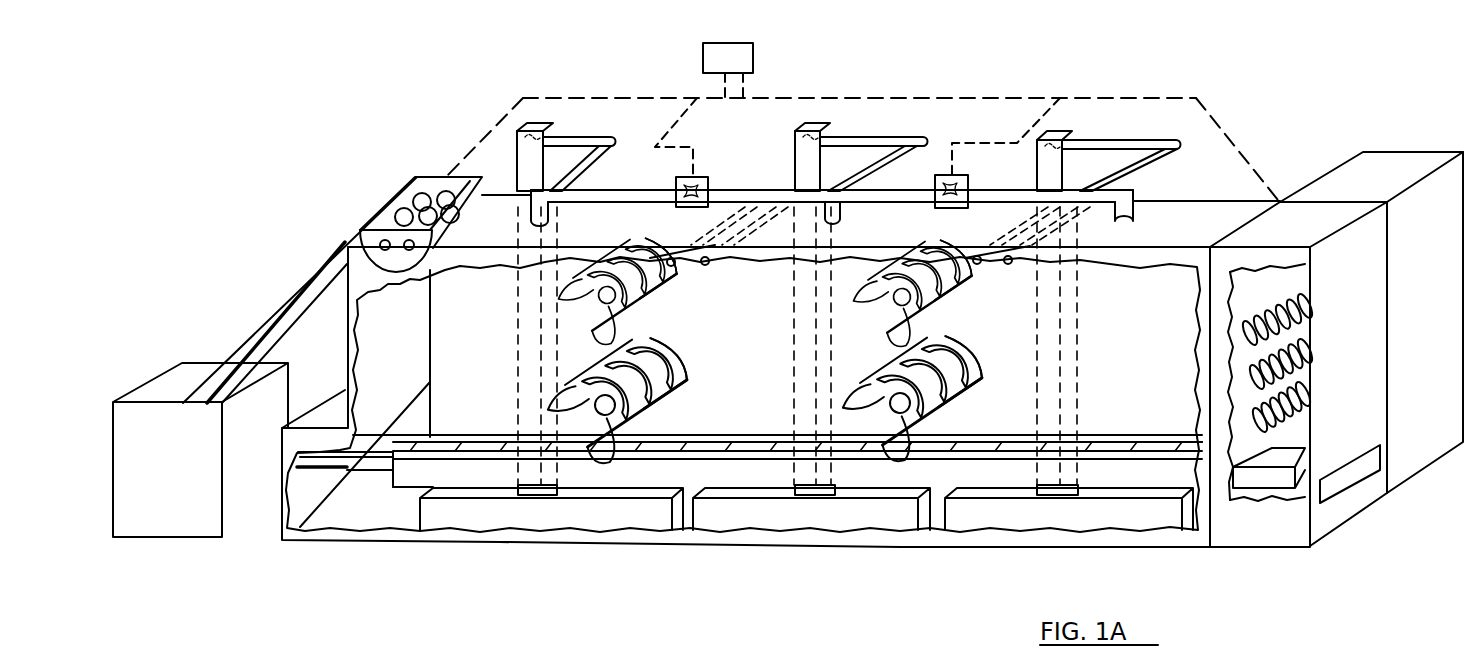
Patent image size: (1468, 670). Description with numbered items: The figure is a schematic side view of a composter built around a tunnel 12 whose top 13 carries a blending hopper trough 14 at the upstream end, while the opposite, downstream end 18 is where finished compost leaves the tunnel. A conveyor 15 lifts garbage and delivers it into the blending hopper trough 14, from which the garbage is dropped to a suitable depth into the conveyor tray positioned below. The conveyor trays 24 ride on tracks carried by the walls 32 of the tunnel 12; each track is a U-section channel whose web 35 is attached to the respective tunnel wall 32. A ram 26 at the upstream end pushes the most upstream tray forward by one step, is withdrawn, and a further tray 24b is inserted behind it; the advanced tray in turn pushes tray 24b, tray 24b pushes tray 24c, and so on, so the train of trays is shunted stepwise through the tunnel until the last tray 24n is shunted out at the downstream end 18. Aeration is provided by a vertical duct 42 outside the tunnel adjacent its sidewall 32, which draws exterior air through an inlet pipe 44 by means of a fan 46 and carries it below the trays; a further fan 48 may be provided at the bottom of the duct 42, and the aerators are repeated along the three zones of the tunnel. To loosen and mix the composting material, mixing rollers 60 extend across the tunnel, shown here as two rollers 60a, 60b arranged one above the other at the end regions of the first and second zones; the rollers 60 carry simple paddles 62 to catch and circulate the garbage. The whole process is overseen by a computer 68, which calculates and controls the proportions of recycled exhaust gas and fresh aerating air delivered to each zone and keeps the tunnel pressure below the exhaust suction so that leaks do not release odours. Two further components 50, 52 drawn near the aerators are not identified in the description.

The tunnel 12 is at (445, 328).
The top 13 is at (1207, 213).
The blending hopper trough 14 is at (434, 181).
The conveyor 15 is at (297, 291).
The downstream end 18 is at (1265, 192).
The conveyor trays 24 is at (738, 448).
The conveyor tray 24b is at (496, 448).
The conveyor tray 24c is at (500, 390).
The conveyor tray 24n is at (1187, 453).
The ram 26 is at (356, 478).
The tunnel walls 32 is at (782, 296).
The web 35 is at (867, 478).
The vertical duct 42 is at (517, 165).
The inlet pipe 44 is at (592, 138).
The fan 46 is at (532, 140).
The further fan 48 is at (702, 177).
The supply manifold 50 is at (706, 185).
The braces 52 is at (592, 160).
The mixing rollers 60 is at (682, 278).
The mixing roller 60a is at (682, 316).
The mixing roller 60b is at (670, 357).
The paddles 62 is at (1278, 293).
The computer 68 is at (756, 31).